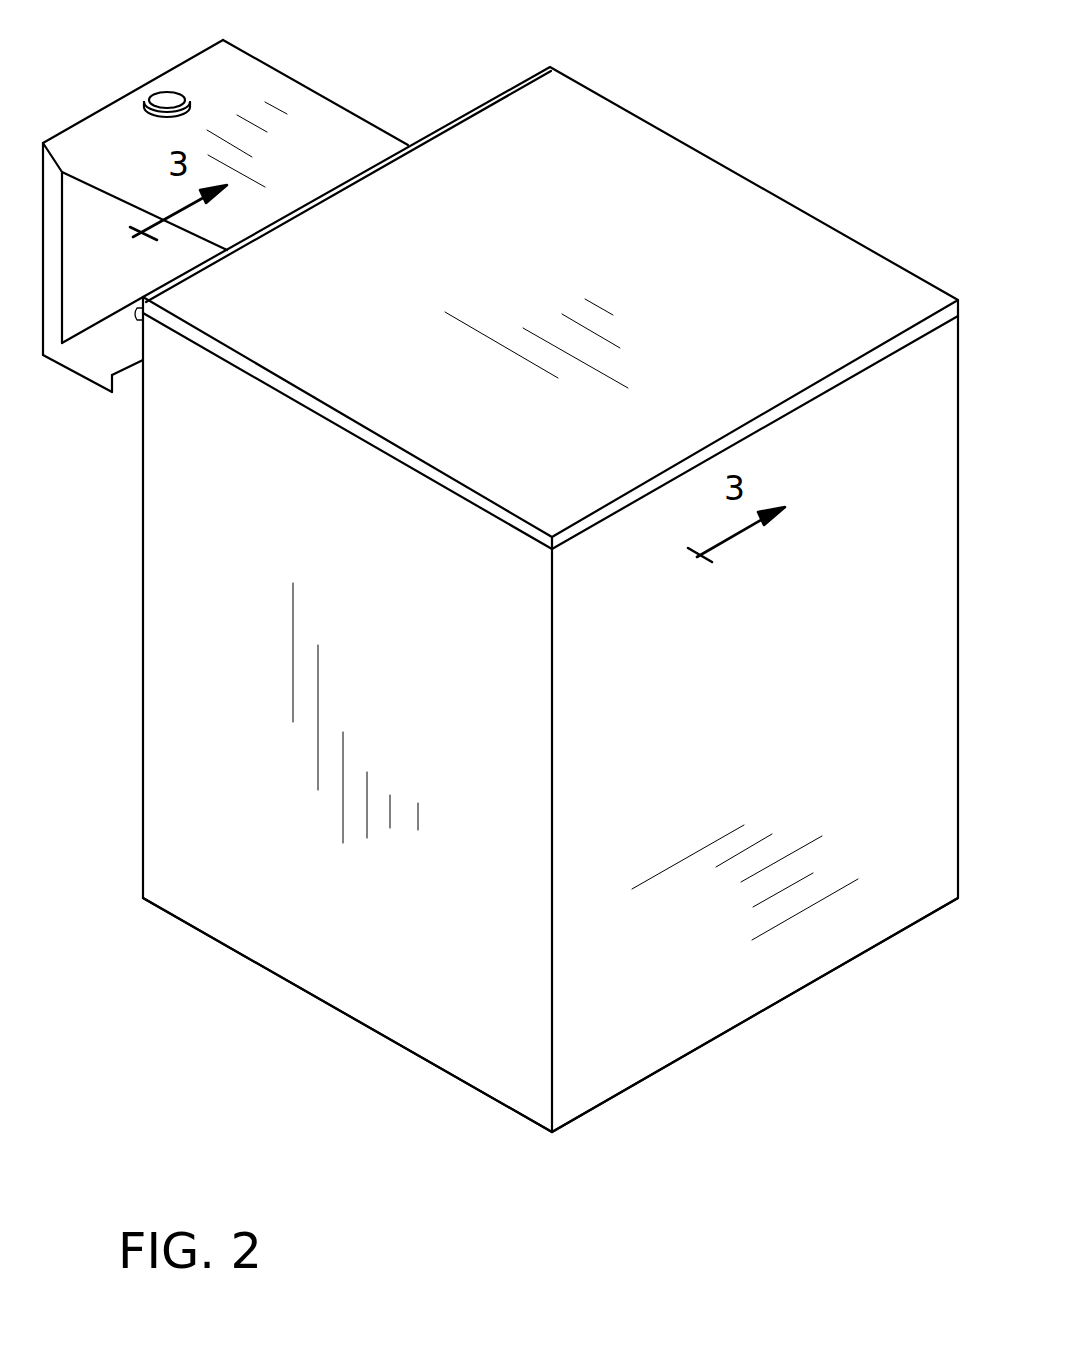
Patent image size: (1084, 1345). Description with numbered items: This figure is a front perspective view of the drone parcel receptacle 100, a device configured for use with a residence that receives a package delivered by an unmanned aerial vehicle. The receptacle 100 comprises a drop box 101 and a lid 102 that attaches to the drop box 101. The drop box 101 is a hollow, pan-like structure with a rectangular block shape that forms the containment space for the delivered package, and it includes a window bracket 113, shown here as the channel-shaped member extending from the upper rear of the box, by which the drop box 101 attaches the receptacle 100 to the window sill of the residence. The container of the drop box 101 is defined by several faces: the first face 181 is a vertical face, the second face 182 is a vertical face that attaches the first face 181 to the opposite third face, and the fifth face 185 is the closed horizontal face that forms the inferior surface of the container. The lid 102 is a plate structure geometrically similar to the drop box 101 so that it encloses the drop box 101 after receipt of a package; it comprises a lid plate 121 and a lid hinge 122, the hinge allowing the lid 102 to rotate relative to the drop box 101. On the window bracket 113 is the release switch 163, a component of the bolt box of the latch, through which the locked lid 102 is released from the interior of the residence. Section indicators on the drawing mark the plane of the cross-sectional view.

The drone parcel receptacle 100 is at (820, 153).
The drop box 101 is at (767, 1040).
The lid 102 is at (893, 242).
The window bracket 113 is at (300, 130).
The lid plate 121 is at (625, 187).
The lid hinge 122 is at (500, 90).
The release switch 163 is at (167, 103).
The first face 181 is at (870, 872).
The second face 182 is at (392, 998).
The fifth face 185 is at (579, 1145).